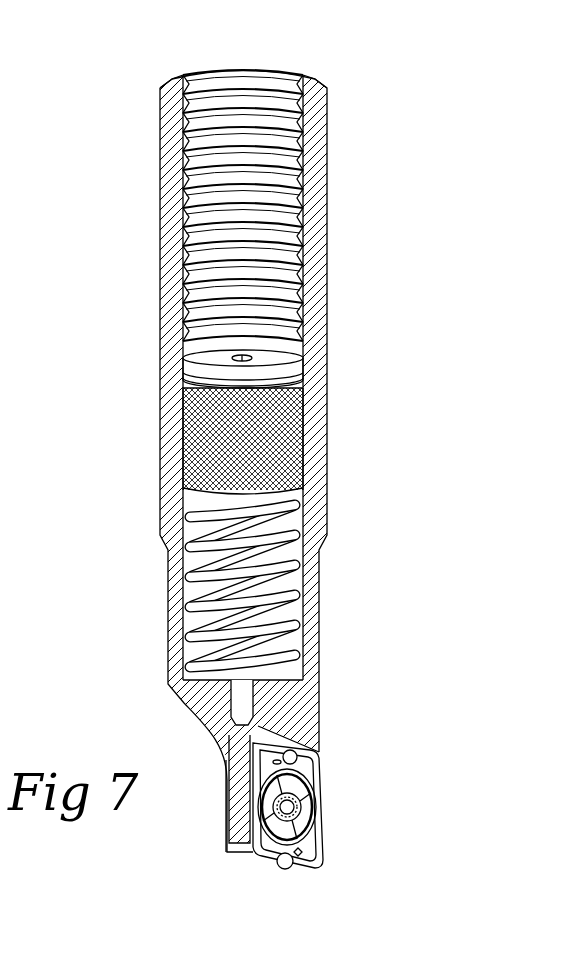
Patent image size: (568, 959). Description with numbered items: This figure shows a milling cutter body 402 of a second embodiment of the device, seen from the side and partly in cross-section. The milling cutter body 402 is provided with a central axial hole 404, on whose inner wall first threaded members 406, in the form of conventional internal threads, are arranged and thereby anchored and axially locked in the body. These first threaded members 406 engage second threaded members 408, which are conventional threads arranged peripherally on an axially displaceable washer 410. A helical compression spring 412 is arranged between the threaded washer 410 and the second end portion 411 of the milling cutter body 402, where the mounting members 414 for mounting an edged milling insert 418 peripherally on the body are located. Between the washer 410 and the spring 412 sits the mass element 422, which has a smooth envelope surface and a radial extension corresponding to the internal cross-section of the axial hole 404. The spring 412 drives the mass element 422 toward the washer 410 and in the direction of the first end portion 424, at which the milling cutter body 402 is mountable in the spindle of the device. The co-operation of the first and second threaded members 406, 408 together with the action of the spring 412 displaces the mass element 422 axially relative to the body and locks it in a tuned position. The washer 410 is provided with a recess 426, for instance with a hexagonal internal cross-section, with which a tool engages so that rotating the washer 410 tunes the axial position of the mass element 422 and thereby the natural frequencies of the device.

The milling cutter body 402 is at (340, 241).
The central axial hole 404 is at (235, 100).
The first threaded members 406 is at (305, 103).
The first end portion 424 is at (175, 94).
The axially displaceable washer 410 is at (207, 353).
The recess 426 is at (250, 357).
The second threaded members 408 is at (205, 382).
The mass element 422 is at (265, 435).
The helical compression spring 412 is at (287, 552).
The second end portion 411 is at (205, 684).
The edged milling insert 418 is at (312, 760).
The mounting members 414 is at (298, 812).